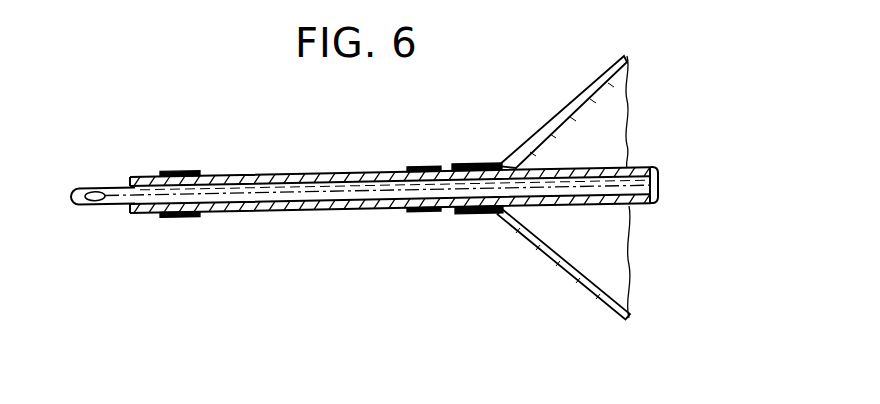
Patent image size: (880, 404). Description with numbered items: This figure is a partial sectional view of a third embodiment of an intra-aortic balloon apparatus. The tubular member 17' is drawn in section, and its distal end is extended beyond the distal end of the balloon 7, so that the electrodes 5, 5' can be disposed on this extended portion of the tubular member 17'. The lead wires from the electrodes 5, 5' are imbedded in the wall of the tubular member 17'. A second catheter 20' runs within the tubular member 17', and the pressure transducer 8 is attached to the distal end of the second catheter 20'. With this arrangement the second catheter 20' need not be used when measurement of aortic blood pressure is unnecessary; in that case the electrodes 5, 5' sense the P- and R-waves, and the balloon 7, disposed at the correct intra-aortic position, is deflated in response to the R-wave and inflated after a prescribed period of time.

The electrode 5 is at (180, 148).
The electrode 5' is at (424, 162).
The balloon 7 is at (580, 96).
The pressure transducer 8 is at (95, 206).
The tubular member 17' is at (381, 223).
The second catheter 20' is at (180, 247).